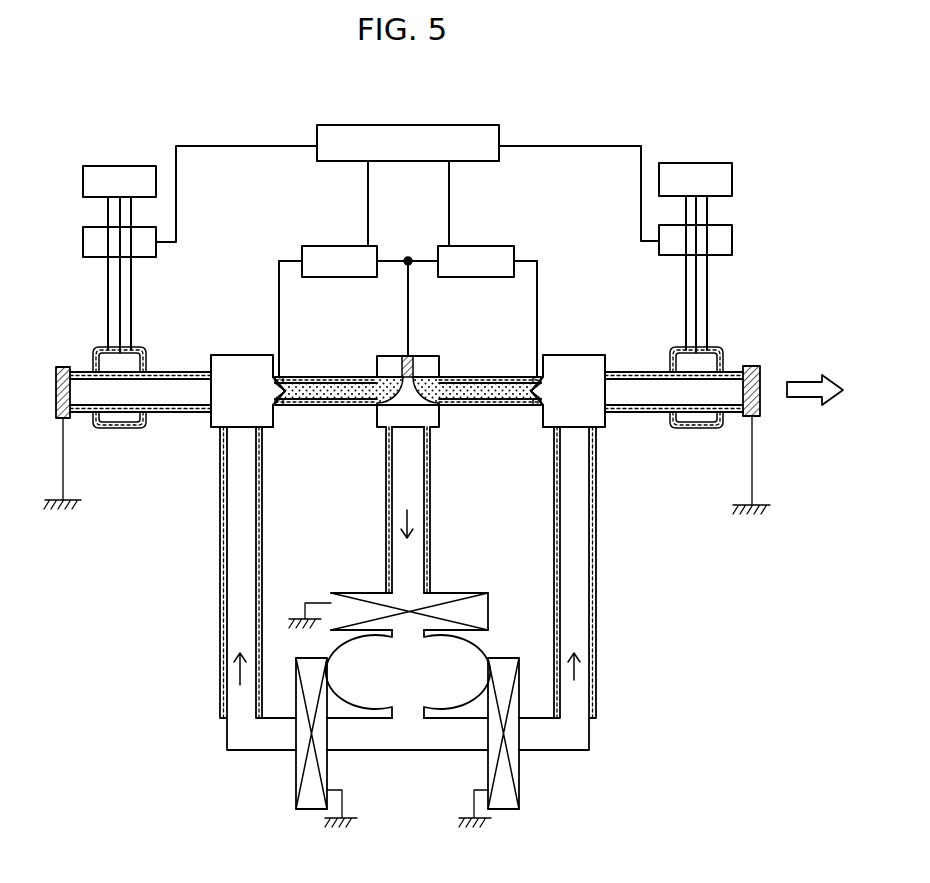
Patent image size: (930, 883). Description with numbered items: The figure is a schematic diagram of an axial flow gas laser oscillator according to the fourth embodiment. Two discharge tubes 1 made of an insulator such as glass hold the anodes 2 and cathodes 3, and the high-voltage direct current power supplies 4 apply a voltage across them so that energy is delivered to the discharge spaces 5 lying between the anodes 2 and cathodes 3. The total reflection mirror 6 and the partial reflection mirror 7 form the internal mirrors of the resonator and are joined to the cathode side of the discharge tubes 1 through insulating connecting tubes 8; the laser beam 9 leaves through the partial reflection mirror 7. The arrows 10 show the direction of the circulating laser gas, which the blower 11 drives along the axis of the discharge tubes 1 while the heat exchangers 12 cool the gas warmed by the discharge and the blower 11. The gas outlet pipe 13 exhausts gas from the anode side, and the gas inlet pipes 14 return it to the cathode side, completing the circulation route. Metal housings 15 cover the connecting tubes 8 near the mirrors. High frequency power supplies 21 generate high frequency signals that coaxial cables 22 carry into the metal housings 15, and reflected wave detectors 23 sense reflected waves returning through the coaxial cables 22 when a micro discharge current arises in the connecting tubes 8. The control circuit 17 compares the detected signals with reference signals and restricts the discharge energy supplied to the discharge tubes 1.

The discharge tube 1 is at (340, 377).
The anode 2 is at (412, 360).
The cathode 3 is at (283, 377).
The high-voltage direct current power supply 4 is at (322, 245).
The discharge space 5 is at (307, 392).
The total reflection mirror 6 is at (57, 418).
The partial reflection mirror 7 is at (757, 417).
The connecting tube 8 is at (78, 415).
The laser beam 9 is at (833, 373).
The arrow 10 is at (235, 678).
The blower 11 is at (378, 708).
The heat exchanger 12 is at (453, 593).
The gas outlet pipe 13 is at (428, 468).
The gas inlet pipe 14 is at (222, 572).
The metal housing 15 is at (122, 430).
The control circuit 17 is at (458, 124).
The high frequency power supply 21 is at (100, 167).
The coaxial cable 22 is at (108, 218).
The reflected wave detector 23 is at (84, 248).